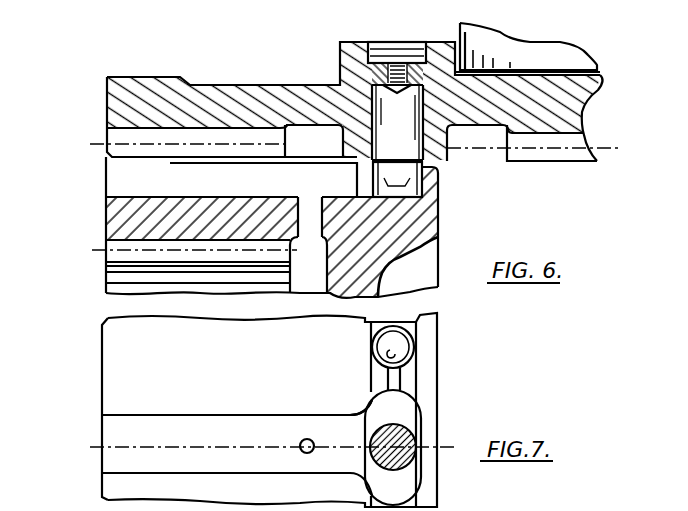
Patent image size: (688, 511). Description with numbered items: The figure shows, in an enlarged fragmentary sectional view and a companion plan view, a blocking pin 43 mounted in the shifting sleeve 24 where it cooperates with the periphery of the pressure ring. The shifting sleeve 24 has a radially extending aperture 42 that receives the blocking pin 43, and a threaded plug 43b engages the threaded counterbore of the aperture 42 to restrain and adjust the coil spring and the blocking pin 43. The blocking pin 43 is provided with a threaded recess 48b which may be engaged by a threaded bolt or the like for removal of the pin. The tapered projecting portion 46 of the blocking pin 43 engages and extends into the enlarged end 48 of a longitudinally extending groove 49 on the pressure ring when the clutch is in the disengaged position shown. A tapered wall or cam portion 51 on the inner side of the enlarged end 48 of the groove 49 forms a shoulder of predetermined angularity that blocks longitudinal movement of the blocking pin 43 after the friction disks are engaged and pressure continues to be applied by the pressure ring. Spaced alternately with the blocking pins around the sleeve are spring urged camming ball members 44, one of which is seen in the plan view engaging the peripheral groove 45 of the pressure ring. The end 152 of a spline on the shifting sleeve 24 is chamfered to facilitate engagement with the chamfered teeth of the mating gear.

In FIG. 6, the shifting sleeve 24 is at (222, 93).
In FIG. 6, the aperture 42 is at (442, 144).
In FIG. 6, the blocking pin 43 is at (372, 80).
In FIG. 6, the threaded plug 43b is at (342, 44).
In FIG. 7, the ball member 44 is at (414, 343).
In FIG. 7, the peripheral groove 45 is at (410, 373).
In FIG. 6, the tapered projecting portion 46 is at (423, 186).
In FIG. 7, the tapered projecting portion 46 is at (415, 439).
In FIG. 7, the enlarged end 48 is at (413, 413).
In FIG. 6, the threaded recess 48b is at (401, 66).
In FIG. 6, the longitudinally extending groove 49 is at (290, 176).
In FIG. 7, the longitudinally extending groove 49 is at (259, 421).
In FIG. 7, the cam portion 51 is at (367, 410).
In FIG. 6, the spline end 152 is at (108, 150).